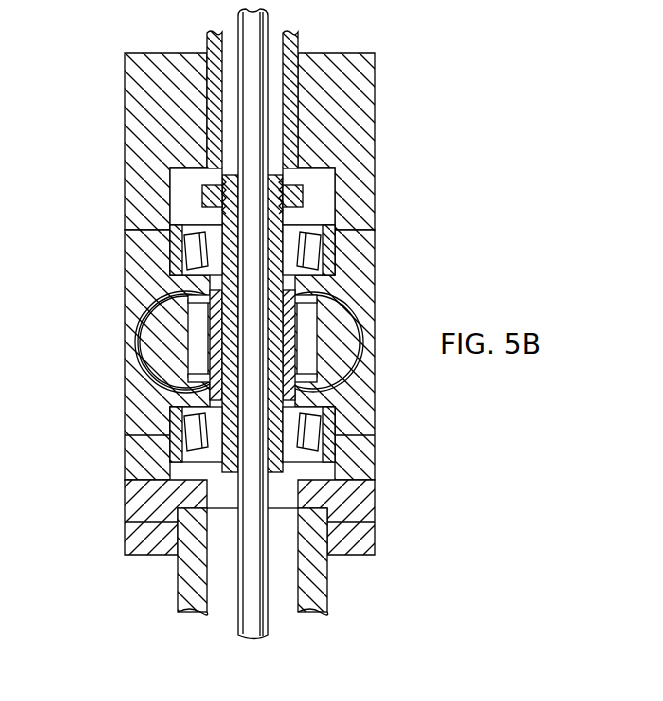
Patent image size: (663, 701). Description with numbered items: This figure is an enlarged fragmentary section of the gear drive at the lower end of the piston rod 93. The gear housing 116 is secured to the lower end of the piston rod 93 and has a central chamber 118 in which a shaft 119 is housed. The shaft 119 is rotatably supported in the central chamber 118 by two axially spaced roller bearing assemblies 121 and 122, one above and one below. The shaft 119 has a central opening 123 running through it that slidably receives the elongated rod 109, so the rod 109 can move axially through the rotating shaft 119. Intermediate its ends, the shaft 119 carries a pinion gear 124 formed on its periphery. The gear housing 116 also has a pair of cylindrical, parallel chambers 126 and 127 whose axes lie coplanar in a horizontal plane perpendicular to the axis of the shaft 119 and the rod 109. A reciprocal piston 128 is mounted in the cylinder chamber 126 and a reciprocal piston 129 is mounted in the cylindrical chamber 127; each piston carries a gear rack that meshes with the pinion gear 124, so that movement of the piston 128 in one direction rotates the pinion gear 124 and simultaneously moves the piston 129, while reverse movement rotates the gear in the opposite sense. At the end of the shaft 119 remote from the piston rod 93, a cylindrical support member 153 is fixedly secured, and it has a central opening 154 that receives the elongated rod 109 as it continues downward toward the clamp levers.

The elongated rod 109 is at (258, 25).
The piston rod 93 is at (292, 48).
The gear housing 116 is at (378, 156).
The central opening 123 is at (285, 186).
The central chamber 118 is at (335, 205).
The roller bearing assembly 121 is at (314, 250).
The shaft 119 is at (277, 277).
The pinion gear 124 is at (305, 330).
The cylindrical chamber 126 is at (145, 322).
The cylindrical chamber 127 is at (357, 335).
The reciprocal piston 128 is at (163, 360).
The reciprocal piston 129 is at (325, 378).
The roller bearing assembly 122 is at (342, 424).
The cylindrical support member 153 is at (313, 588).
The central opening 154 is at (292, 600).